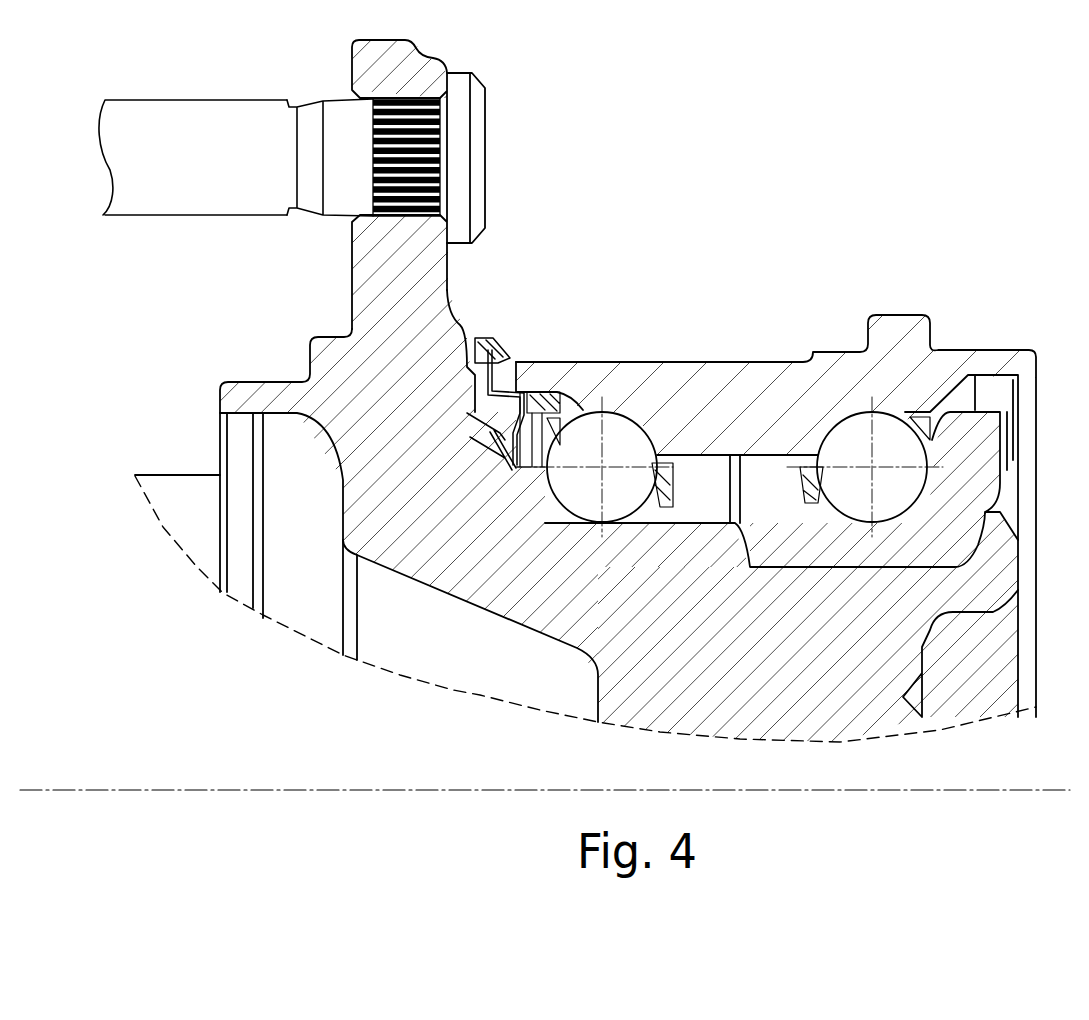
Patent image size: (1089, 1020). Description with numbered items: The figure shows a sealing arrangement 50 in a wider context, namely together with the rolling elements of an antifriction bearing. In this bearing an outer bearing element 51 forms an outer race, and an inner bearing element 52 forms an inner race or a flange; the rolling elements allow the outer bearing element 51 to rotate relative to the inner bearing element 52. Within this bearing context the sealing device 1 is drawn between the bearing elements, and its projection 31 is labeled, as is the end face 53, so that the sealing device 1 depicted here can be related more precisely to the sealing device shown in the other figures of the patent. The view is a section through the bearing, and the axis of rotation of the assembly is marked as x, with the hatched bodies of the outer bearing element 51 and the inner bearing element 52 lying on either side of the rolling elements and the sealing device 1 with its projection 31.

The sealing device 1 is at (548, 345).
The projection 31 is at (498, 326).
The sealing arrangement 50 is at (808, 246).
The outer bearing element 51 is at (970, 363).
The inner bearing element 52 is at (320, 364).
The end face 53 is at (472, 373).
The axis of rotation x is at (921, 792).